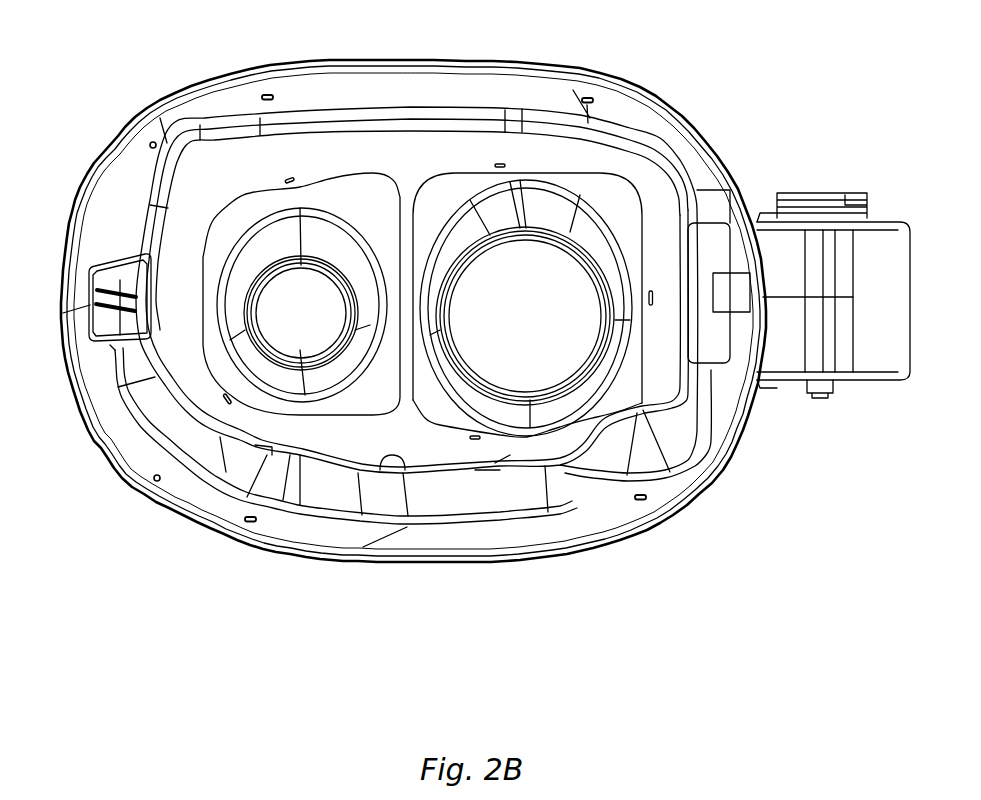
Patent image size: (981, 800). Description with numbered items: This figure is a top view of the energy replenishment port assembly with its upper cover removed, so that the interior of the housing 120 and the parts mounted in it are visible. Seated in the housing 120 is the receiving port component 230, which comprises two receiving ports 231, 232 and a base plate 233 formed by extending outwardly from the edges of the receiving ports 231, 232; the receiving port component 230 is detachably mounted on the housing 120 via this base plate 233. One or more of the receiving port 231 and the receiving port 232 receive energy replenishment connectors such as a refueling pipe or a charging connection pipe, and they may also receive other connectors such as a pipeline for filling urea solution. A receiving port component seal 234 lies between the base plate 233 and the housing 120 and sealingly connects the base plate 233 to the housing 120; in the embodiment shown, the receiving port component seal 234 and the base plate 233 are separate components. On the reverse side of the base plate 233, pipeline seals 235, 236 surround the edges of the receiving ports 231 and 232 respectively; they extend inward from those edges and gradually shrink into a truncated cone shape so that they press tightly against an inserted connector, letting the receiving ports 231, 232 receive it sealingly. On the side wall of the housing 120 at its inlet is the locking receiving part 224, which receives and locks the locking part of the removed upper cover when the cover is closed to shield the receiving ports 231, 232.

The housing 120 is at (385, 58).
The receiving port component 230 is at (247, 173).
The receiving port 231 is at (515, 362).
The receiving port 232 is at (288, 323).
The base plate 233 is at (653, 183).
The receiving port component seal 234 is at (513, 130).
The pipeline seal 235 is at (577, 395).
The pipeline seal 236 is at (337, 377).
The locking receiving part 224 is at (90, 392).